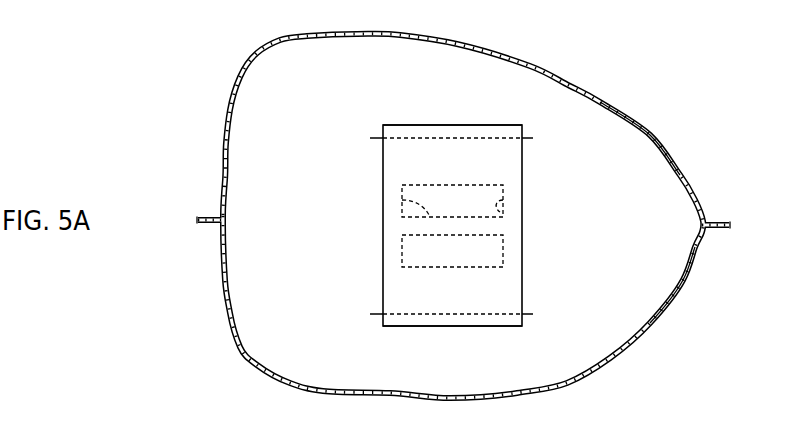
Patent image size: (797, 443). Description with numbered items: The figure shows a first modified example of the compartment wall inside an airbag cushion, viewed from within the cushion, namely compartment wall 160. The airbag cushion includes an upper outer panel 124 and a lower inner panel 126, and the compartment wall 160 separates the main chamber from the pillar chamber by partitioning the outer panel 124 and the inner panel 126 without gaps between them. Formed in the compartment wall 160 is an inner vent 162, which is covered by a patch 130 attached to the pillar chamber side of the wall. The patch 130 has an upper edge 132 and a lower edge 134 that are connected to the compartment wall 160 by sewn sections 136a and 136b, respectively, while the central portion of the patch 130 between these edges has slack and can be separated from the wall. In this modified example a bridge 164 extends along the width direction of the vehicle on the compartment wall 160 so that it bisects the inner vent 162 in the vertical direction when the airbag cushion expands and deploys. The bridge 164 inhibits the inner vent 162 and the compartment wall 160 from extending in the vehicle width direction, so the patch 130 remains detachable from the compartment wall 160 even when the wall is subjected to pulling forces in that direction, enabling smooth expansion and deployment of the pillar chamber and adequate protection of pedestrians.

The upper outer panel 124 is at (705, 192).
The lower inner panel 126 is at (685, 282).
The compartment wall 160 is at (643, 147).
The patch 130 is at (522, 168).
The upper edge 132 is at (433, 125).
The lower edge 134 is at (450, 326).
The sewn section 136a is at (535, 138).
The sewn section 136b is at (535, 314).
The inner vent 162 is at (503, 199).
The bridge 164 is at (402, 199).